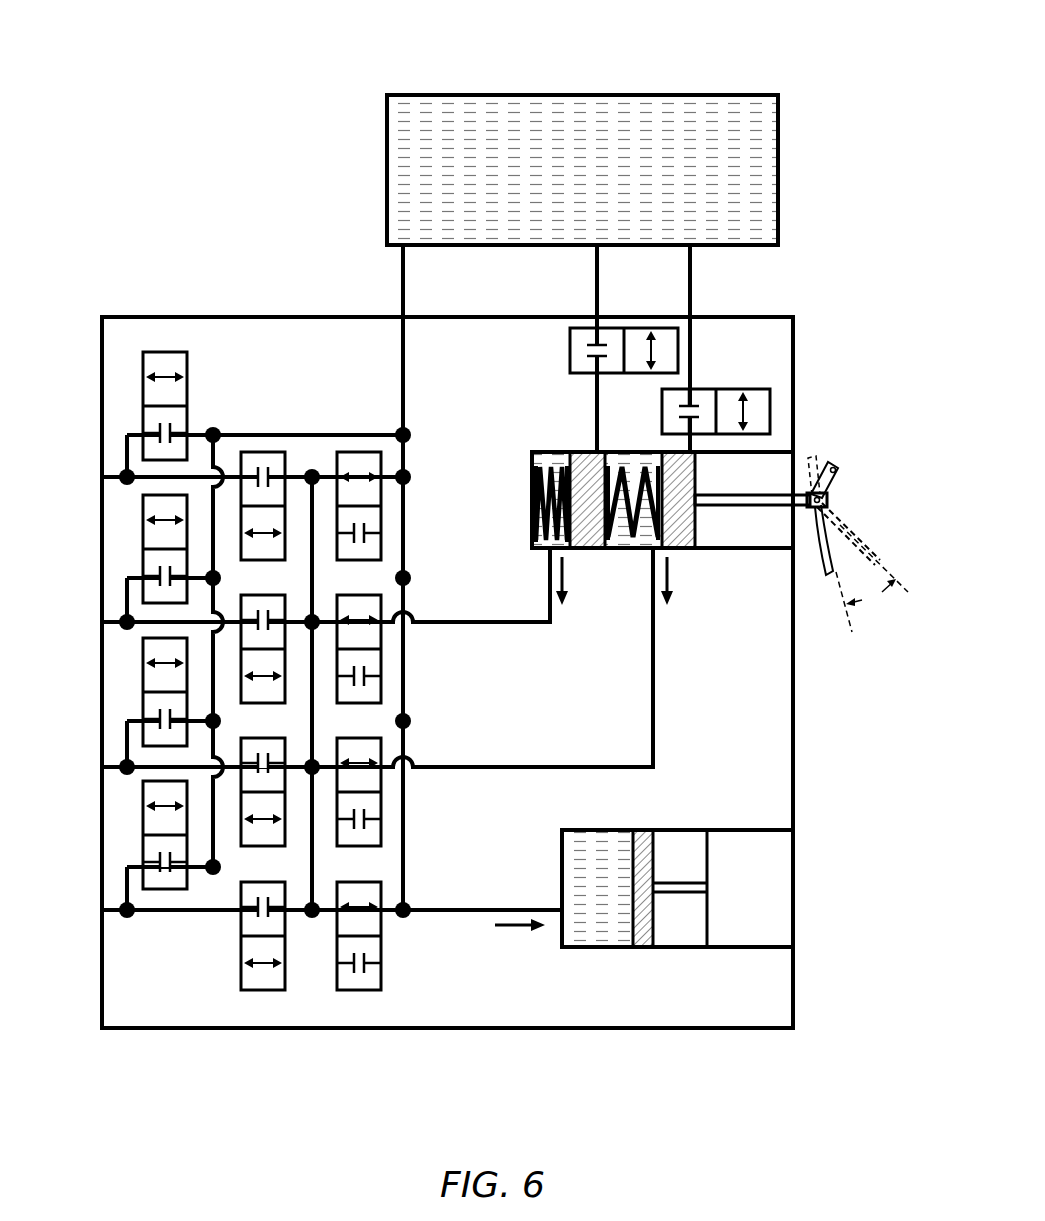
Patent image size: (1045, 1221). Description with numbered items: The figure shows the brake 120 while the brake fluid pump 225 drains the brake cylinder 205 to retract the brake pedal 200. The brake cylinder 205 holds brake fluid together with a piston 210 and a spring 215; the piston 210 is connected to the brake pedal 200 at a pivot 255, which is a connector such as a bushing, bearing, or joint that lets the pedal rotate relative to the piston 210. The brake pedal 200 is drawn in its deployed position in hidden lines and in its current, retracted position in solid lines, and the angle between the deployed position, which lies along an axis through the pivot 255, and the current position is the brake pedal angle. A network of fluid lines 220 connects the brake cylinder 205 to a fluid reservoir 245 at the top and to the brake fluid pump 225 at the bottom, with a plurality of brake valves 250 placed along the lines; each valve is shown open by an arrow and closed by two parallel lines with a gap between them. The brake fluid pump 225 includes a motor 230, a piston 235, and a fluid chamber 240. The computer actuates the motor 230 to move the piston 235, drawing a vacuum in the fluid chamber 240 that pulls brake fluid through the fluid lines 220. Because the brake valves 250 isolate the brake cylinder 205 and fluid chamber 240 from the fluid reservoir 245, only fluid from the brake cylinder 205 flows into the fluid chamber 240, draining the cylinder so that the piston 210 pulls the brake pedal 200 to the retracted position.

The brake 120 is at (210, 134).
The brake pedal 200 is at (832, 580).
The brake cylinder 205 is at (532, 460).
The piston 210 is at (585, 533).
The spring 215 is at (545, 535).
The fluid lines 220 is at (405, 350).
The brake fluid pump 225 is at (740, 950).
The motor 230 is at (795, 907).
The piston 235 is at (645, 935).
The fluid chamber 240 is at (590, 935).
The fluid reservoir 245 is at (748, 95).
The brake valves 250 is at (143, 360).
The pivot 255 is at (822, 490).